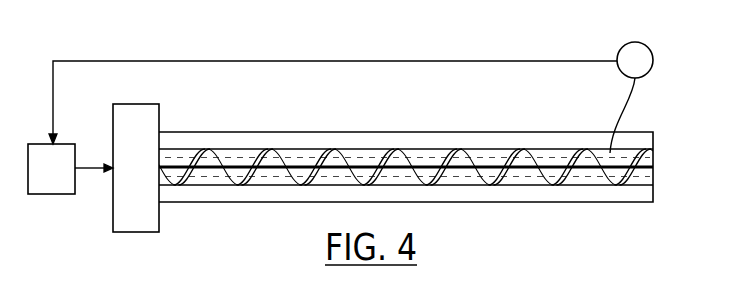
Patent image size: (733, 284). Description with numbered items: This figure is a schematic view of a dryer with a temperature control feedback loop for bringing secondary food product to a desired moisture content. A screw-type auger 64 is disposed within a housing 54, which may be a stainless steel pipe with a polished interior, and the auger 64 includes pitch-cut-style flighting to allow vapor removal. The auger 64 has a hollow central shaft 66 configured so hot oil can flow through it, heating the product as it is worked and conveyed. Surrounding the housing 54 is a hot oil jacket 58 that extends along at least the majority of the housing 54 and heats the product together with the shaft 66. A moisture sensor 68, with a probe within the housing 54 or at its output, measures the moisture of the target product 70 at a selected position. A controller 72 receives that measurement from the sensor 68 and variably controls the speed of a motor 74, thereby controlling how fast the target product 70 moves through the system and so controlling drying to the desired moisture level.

The housing 54 is at (516, 186).
The hot oil jacket 58 is at (552, 203).
The screw-type auger 64 is at (375, 161).
The hollow central shaft 66 is at (296, 163).
The moisture sensor 68 is at (632, 42).
The target product 70 is at (580, 178).
The controller 72 is at (62, 178).
The motor 74 is at (147, 178).